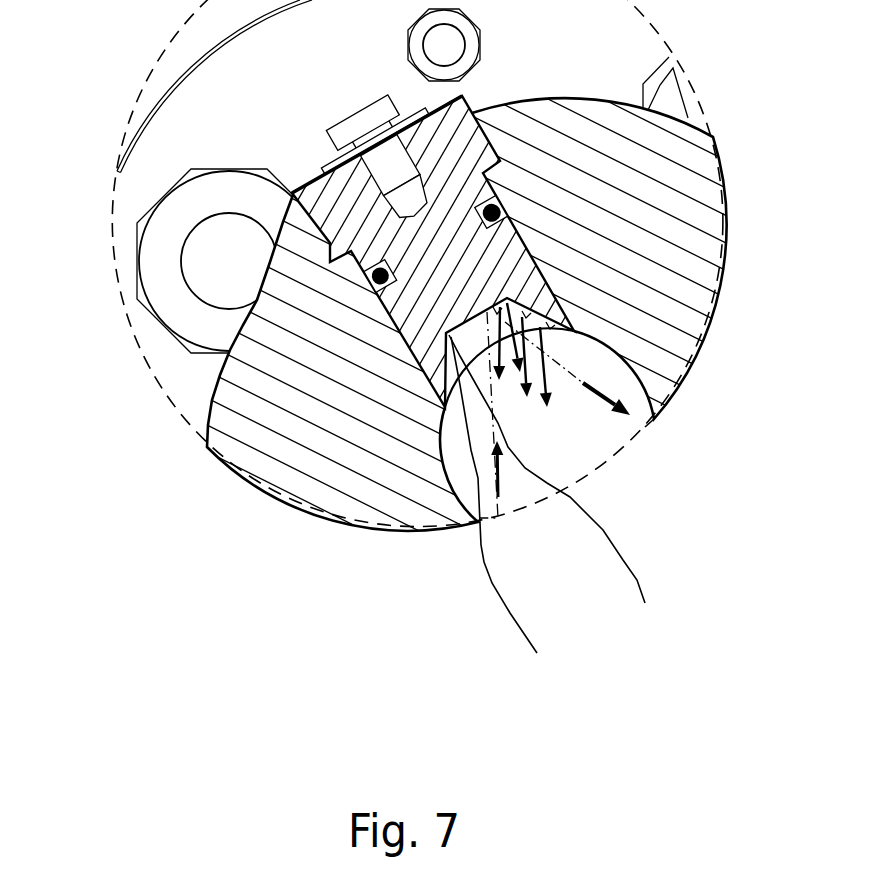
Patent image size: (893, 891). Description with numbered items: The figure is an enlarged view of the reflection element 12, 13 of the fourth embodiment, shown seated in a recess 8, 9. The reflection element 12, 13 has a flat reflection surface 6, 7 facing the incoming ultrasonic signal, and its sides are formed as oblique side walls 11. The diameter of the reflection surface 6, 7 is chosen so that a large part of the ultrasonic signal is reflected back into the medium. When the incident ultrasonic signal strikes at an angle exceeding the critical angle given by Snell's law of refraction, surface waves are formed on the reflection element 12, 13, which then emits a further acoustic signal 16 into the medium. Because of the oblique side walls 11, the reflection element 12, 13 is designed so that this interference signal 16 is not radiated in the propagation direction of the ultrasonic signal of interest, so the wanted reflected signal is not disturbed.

The reflection surface 6 is at (557, 477).
The reflection surface 7 is at (557, 477).
The recess 8 is at (438, 320).
The recess 9 is at (438, 320).
The oblique side walls 11 is at (503, 498).
The reflection element 12 is at (422, 453).
The reflection element 13 is at (422, 453).
The further acoustic signal 16 is at (450, 291).